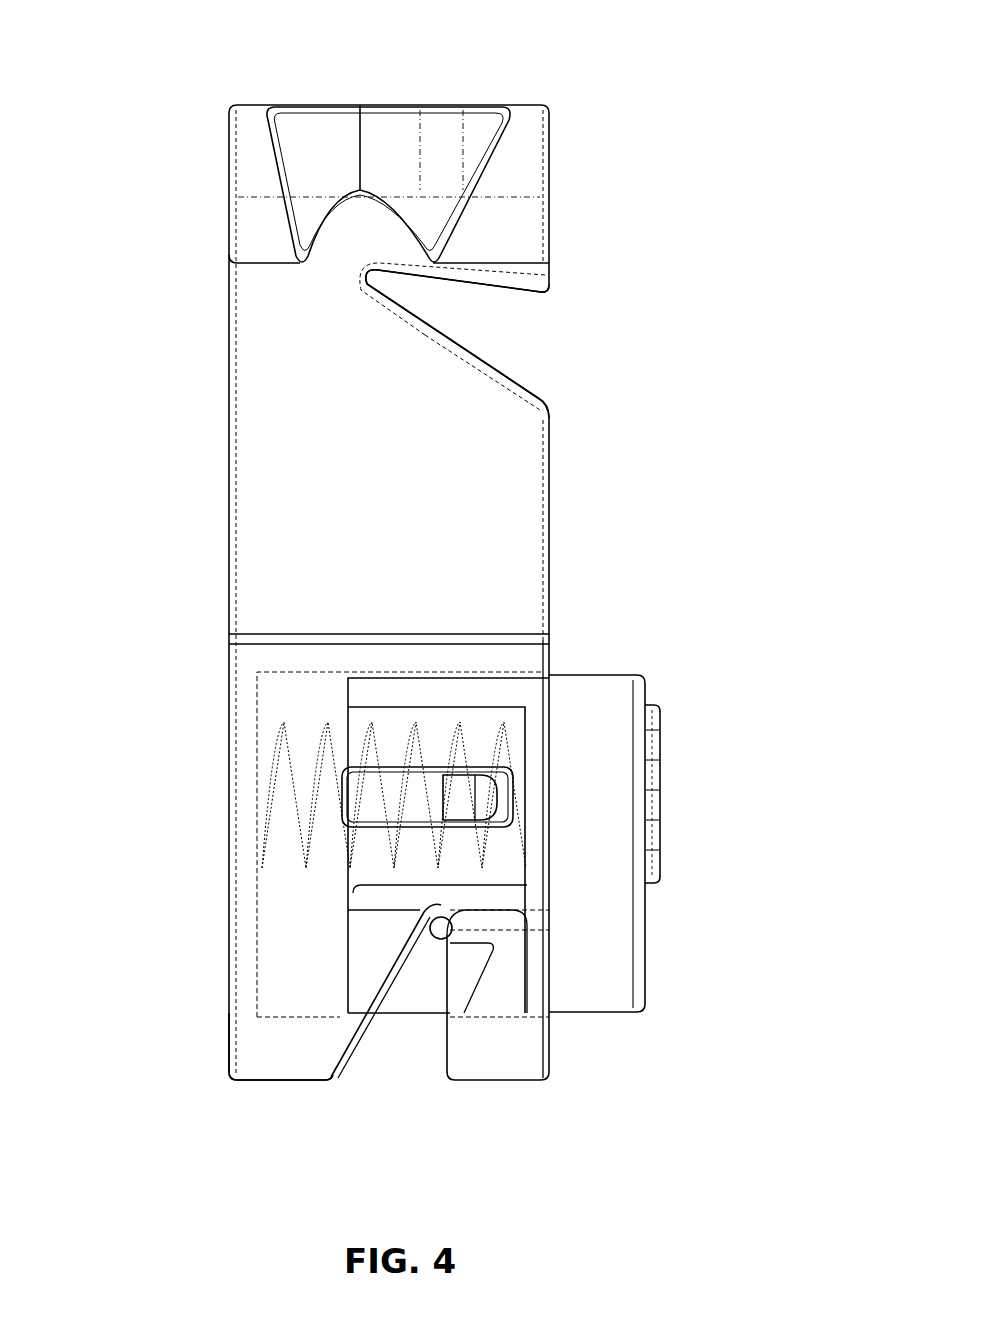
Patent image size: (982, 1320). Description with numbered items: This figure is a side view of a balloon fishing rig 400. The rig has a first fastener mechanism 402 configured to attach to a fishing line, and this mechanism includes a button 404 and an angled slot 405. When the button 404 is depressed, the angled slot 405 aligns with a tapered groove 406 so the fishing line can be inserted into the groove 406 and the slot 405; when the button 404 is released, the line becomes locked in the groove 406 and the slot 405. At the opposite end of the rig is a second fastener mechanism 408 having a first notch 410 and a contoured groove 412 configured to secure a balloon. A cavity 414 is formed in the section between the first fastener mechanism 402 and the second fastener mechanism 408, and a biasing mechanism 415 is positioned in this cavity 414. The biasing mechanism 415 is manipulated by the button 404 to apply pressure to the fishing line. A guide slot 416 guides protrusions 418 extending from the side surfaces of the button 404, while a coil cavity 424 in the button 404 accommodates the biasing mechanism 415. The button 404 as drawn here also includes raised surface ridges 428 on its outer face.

The balloon fishing rig 400 is at (718, 36).
The first fastener mechanism 402 is at (207, 788).
The button 404 is at (612, 968).
The angled slot 405 is at (480, 920).
The tapered groove 406 is at (378, 1038).
The second fastener mechanism 408 is at (198, 315).
The first notch 410 is at (478, 312).
The contoured groove 412 is at (438, 142).
The cavity 414 is at (303, 935).
The biasing mechanism 415 is at (287, 778).
The guide slot 416 is at (405, 795).
The protrusions 418 is at (500, 770).
The coil cavity 424 is at (415, 728).
The raised surface ridges 428 is at (648, 778).